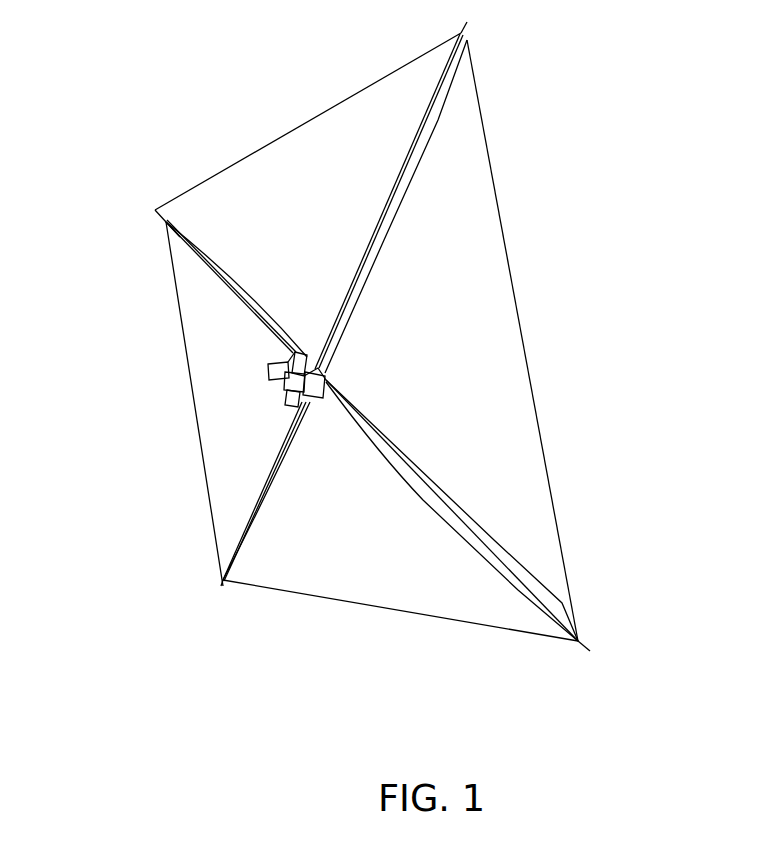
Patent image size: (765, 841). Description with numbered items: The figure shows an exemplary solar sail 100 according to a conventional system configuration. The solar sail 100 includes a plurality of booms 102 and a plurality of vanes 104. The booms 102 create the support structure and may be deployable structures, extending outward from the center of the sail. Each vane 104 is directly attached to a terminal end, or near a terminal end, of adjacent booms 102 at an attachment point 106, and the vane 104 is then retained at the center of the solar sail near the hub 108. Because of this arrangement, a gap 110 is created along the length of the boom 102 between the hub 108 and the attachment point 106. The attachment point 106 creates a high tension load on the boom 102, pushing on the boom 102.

The solar sail 100 is at (550, 97).
The boom 102 is at (243, 297).
The vane 104 is at (293, 215).
The attachment point 106 is at (166, 222).
The hub 108 is at (290, 375).
The gap 110 is at (420, 145).